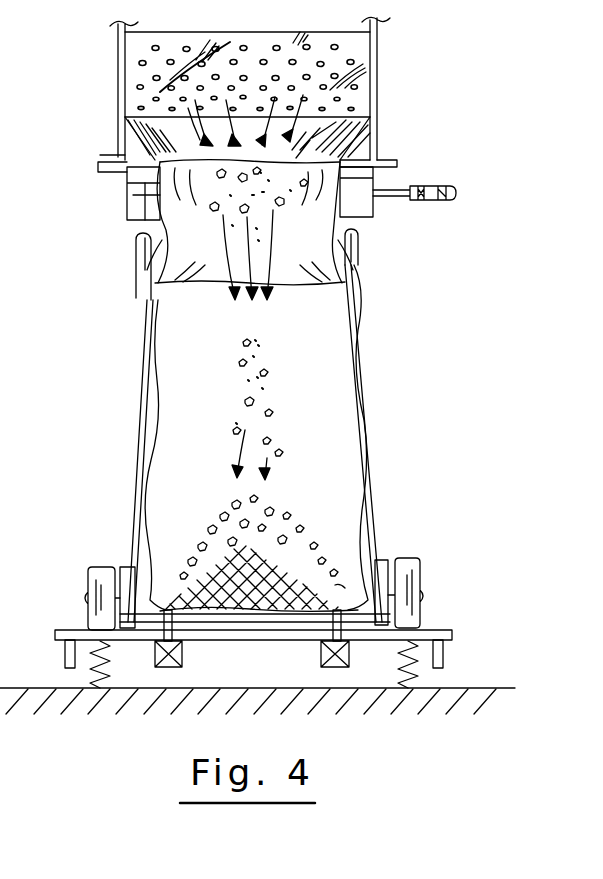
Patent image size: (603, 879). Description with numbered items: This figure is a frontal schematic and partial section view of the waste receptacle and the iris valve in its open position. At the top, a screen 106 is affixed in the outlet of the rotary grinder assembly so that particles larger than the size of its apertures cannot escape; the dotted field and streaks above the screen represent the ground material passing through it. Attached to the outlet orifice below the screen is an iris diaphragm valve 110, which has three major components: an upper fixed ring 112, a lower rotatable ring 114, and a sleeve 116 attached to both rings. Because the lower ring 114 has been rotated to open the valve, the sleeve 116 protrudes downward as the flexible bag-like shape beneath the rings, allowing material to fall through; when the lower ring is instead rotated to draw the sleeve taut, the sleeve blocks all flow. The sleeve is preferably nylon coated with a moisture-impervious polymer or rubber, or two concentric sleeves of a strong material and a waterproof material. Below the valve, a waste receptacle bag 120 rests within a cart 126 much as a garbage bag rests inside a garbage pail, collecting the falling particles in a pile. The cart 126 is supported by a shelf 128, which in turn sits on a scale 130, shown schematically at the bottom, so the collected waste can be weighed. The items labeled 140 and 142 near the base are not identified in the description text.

The screen 106 is at (360, 74).
The iris diaphragm valve 110 is at (386, 178).
The upper fixed ring 112 is at (377, 148).
The lower rotatable ring 114 is at (135, 211).
The sleeve 116 is at (140, 193).
The waste receptacle bag 120 is at (338, 384).
The cart 126 is at (376, 422).
The shelf 128 is at (430, 628).
The scale 130 is at (445, 656).
The vibration damper block 140 is at (183, 653).
The support post 142 is at (333, 628).